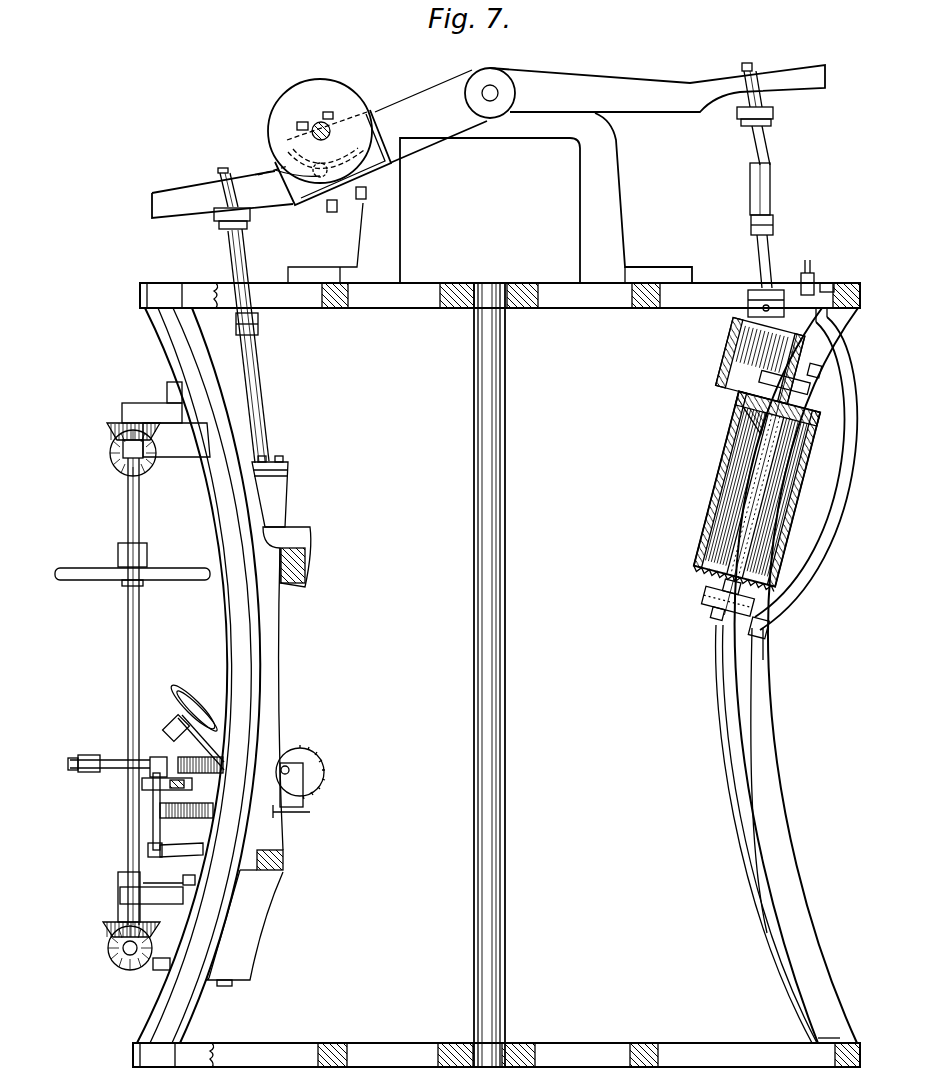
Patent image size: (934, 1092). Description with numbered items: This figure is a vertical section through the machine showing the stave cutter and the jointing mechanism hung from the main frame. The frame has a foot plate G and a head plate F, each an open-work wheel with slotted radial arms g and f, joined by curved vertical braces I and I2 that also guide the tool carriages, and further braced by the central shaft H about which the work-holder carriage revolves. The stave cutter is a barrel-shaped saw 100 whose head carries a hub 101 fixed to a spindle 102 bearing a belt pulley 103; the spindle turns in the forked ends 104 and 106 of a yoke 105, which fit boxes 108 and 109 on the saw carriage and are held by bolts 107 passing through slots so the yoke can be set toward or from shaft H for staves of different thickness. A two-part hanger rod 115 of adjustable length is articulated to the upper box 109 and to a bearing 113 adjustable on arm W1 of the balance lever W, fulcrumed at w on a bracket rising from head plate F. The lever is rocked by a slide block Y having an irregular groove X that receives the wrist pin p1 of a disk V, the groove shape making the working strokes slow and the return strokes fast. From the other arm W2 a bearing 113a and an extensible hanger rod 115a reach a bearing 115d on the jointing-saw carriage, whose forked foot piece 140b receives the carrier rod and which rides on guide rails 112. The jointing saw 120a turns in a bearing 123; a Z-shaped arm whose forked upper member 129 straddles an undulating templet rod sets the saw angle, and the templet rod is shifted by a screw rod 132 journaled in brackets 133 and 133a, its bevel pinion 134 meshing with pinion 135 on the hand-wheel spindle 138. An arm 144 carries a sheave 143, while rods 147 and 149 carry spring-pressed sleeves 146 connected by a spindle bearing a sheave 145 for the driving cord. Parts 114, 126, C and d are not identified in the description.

The head plate F is at (393, 308).
The slotted radial arms of head plate f is at (140, 293).
The foot or base plate G is at (387, 1052).
The slotted radial arms of foot plate g is at (133, 1056).
The central rod or shaft H is at (503, 675).
The vertical braces I is at (796, 675).
The vertical braces I2 is at (165, 340).
The guide rails 112 is at (720, 684).
The arm of balance lever W1 is at (645, 88).
The fulcrum of balance lever w is at (495, 94).
The two-armed or balance lever W is at (431, 116).
The slide block Y is at (378, 155).
The wrist pin p1 is at (318, 174).
The disk V is at (315, 117).
The irregular groove X is at (297, 164).
The arm of balance lever W2 is at (152, 207).
The bearing 113a is at (216, 224).
The extensible hanger rod 115a is at (254, 374).
The bearing 115d is at (284, 497).
The bearing 113 is at (773, 112).
The two-part hanger rod 115 is at (769, 196).
The mounting block 114 is at (756, 306).
The forked end of yoke 106 is at (792, 305).
The upper bearing box 109 is at (836, 297).
The electric motor C is at (747, 487).
The barrel-shaped saw 100 is at (757, 491).
The hub 101 is at (775, 419).
The spindle 102 is at (761, 474).
The belt pulley 103 is at (769, 363).
The forked end of yoke 104 is at (729, 596).
The yoke or bow 105 is at (806, 469).
The bolts 107 is at (765, 492).
The box 108 is at (758, 628).
The bracket 133a is at (148, 410).
The bevel pinion 135 is at (110, 427).
The bevel pinion 134 is at (124, 458).
The vertical spindle 138 is at (134, 636).
The sheave or grooved pulley 143 is at (194, 680).
The arm 144 is at (178, 733).
The pin d is at (208, 786).
The sheave or grooved pulley 145 is at (190, 786).
The upper horizontal member of Z-shaped arm 129 is at (110, 769).
The sleeves 146 is at (156, 812).
The horizontal rod 147 is at (190, 818).
The horizontal rod 149 is at (221, 767).
The jointing saw 120a is at (324, 771).
The bearing 123 is at (291, 808).
The slotted or forked foot piece 140b is at (247, 931).
The bracket lug 126 is at (169, 875).
The bracket 133 is at (118, 896).
The screw rod 132 is at (108, 957).